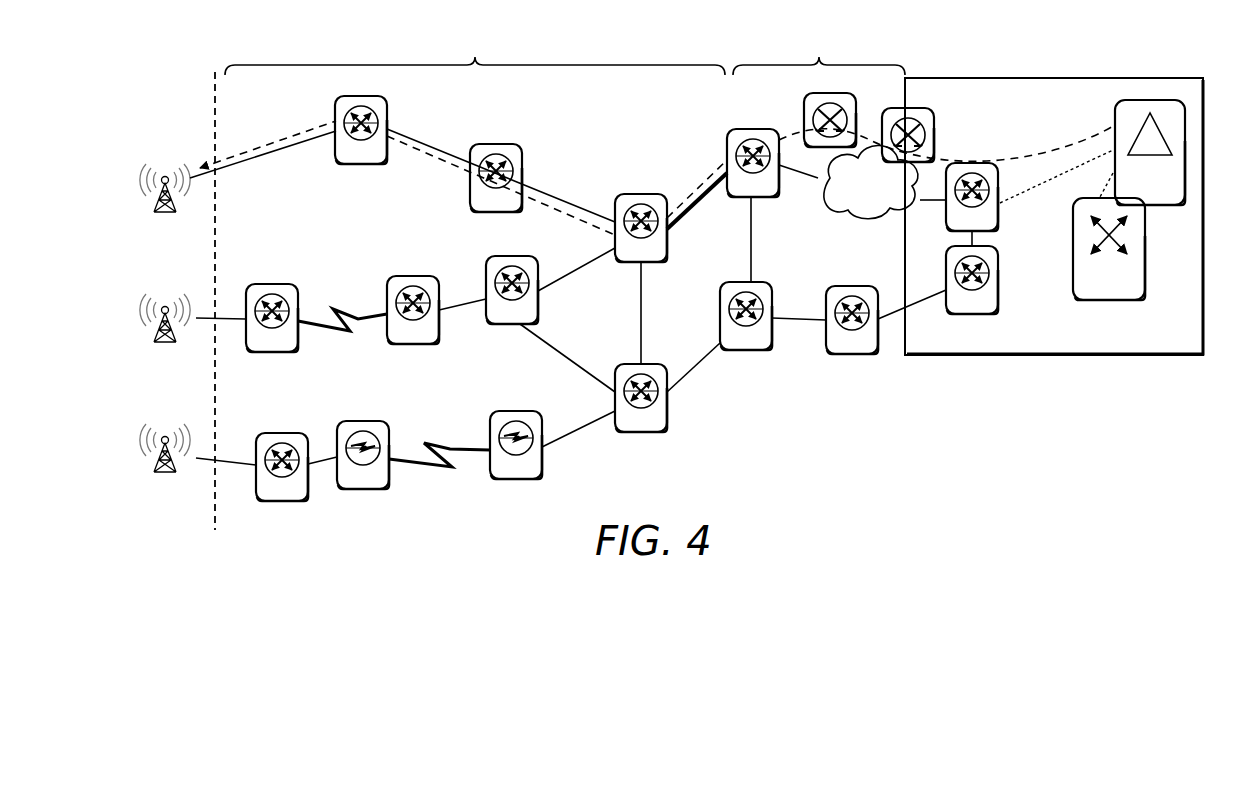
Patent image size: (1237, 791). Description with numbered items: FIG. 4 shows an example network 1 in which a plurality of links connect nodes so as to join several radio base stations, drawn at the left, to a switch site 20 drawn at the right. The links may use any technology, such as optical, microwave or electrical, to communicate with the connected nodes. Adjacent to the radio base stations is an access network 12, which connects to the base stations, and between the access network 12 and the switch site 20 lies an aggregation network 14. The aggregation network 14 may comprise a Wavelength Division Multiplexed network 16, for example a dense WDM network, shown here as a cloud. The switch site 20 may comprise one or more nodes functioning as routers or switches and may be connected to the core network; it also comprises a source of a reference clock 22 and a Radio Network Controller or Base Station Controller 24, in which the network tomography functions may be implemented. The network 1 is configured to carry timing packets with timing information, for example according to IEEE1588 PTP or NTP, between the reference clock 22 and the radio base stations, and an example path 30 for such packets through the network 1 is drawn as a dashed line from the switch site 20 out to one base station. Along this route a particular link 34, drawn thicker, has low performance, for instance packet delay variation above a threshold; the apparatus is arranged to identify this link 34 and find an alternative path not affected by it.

The network 1 is at (175, 98).
The access network 12 is at (475, 53).
The aggregation network 14 is at (819, 53).
The Wavelength Division Multiplexed (WDM) network 16 is at (840, 222).
The switch site 20 is at (1190, 356).
The reference clock 22 is at (1164, 100).
The Radio Network Controller (RNC) or Base Station Controller (BSC) 24 is at (1073, 292).
The path 30 is at (433, 136).
The link 34 is at (700, 207).